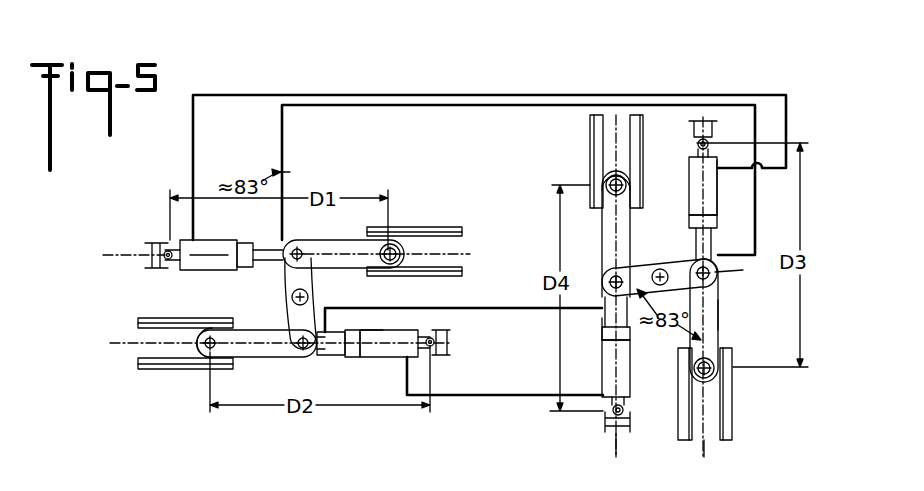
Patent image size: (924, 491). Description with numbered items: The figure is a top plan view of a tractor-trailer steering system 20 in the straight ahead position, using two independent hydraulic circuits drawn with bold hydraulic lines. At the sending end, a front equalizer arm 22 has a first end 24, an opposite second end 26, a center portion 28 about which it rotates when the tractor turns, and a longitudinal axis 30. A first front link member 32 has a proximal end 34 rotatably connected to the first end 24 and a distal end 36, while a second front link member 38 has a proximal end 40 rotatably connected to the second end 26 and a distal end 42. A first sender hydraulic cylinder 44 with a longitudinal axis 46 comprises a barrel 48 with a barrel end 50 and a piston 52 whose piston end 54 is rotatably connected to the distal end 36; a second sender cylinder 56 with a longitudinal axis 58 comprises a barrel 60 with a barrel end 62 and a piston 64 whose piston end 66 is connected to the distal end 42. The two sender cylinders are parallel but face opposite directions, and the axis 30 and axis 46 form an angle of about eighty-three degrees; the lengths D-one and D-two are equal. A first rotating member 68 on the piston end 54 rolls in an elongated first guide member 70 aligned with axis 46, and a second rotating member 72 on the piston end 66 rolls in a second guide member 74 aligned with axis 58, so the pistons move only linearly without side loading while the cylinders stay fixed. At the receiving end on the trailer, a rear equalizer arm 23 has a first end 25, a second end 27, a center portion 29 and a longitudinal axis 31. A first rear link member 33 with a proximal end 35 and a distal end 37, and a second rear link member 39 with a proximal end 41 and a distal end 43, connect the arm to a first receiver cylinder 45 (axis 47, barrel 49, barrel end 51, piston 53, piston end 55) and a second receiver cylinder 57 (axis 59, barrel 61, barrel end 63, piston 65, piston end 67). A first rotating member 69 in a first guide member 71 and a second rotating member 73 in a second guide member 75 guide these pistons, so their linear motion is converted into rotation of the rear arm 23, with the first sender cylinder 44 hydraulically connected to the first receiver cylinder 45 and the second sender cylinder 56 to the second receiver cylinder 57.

The steering system 20 is at (836, 122).
The front equalizer arm 22 is at (284, 322).
The rear equalizer arm 23 is at (662, 270).
The first end 24 is at (285, 247).
The first end 25 is at (716, 260).
The second end 26 is at (303, 355).
The second end 27 is at (610, 283).
The center portion 28 is at (308, 298).
The center portion 29 is at (650, 267).
The longitudinal axis 30 is at (285, 197).
The longitudinal axis 31 is at (787, 270).
The first front link member 32 is at (317, 239).
The first rear link member 33 is at (718, 312).
The proximal end 34 is at (277, 266).
The proximal end 35 is at (712, 279).
The distal end 36 is at (397, 243).
The distal end 37 is at (697, 374).
The second front link member 38 is at (263, 359).
The second rear link member 39 is at (602, 234).
The proximal end 40 is at (311, 355).
The proximal end 41 is at (605, 264).
The distal end 42 is at (208, 330).
The distal end 43 is at (609, 186).
The first sender hydraulic cylinder 44 is at (237, 240).
The first receiver hydraulic cylinder 45 is at (690, 193).
The longitudinal axis 46 is at (128, 255).
The longitudinal axis 47 is at (706, 452).
The barrel 48 is at (210, 270).
The barrel 49 is at (717, 212).
The barrel end 50 is at (168, 249).
The barrel end 51 is at (697, 148).
The piston 52 is at (247, 270).
The piston 53 is at (690, 223).
The piston end 54 is at (392, 270).
The piston end 55 is at (714, 377).
The second hydraulic sender cylinder 56 is at (378, 362).
The second hydraulic receiver cylinder 57 is at (595, 327).
The longitudinal axis 58 is at (133, 344).
The longitudinal axis 59 is at (617, 450).
The barrel 60 is at (376, 332).
The barrel 61 is at (603, 370).
The barrel end 62 is at (434, 355).
The barrel end 63 is at (607, 420).
The piston 64 is at (351, 357).
The piston 65 is at (622, 335).
The piston end 66 is at (206, 360).
The piston end 67 is at (624, 180).
The first rotating member 68 is at (408, 250).
The first rotating member 69 is at (690, 390).
The first guide member 70 is at (452, 276).
The first guide member 71 is at (683, 438).
The second rotating member 72 is at (190, 332).
The second rotating member 73 is at (606, 178).
The second guide member 74 is at (166, 370).
The second guide member 75 is at (601, 142).